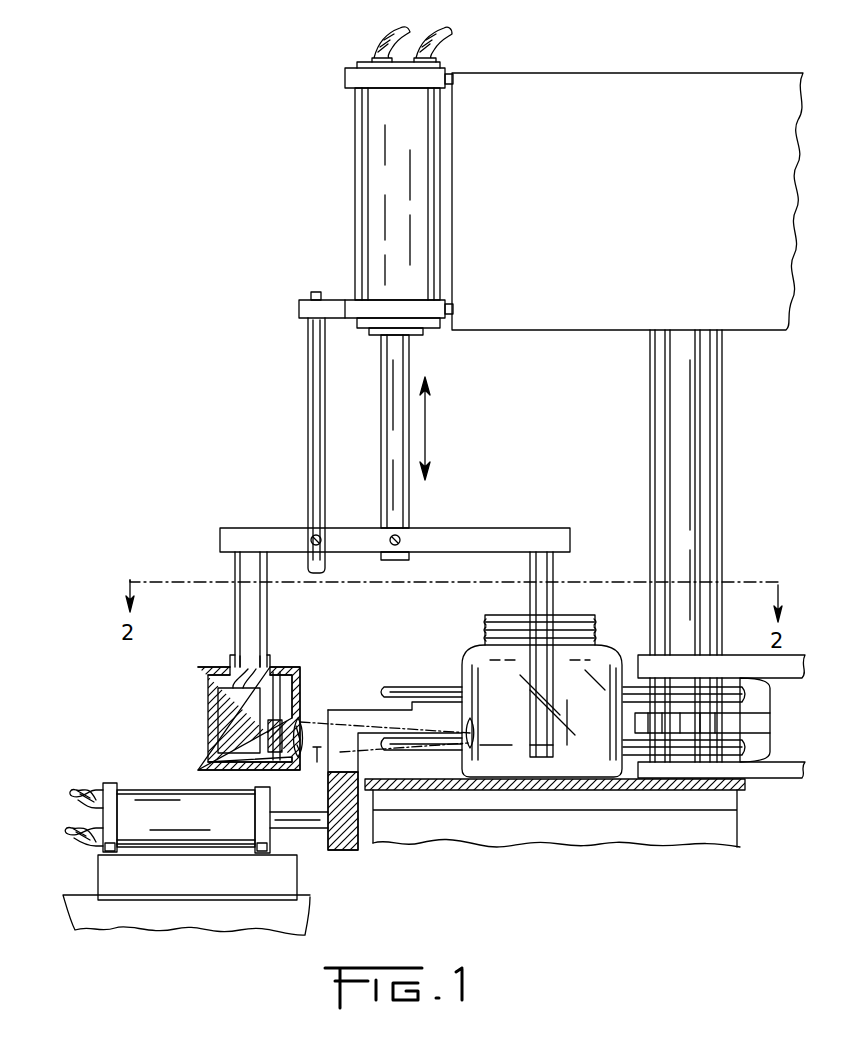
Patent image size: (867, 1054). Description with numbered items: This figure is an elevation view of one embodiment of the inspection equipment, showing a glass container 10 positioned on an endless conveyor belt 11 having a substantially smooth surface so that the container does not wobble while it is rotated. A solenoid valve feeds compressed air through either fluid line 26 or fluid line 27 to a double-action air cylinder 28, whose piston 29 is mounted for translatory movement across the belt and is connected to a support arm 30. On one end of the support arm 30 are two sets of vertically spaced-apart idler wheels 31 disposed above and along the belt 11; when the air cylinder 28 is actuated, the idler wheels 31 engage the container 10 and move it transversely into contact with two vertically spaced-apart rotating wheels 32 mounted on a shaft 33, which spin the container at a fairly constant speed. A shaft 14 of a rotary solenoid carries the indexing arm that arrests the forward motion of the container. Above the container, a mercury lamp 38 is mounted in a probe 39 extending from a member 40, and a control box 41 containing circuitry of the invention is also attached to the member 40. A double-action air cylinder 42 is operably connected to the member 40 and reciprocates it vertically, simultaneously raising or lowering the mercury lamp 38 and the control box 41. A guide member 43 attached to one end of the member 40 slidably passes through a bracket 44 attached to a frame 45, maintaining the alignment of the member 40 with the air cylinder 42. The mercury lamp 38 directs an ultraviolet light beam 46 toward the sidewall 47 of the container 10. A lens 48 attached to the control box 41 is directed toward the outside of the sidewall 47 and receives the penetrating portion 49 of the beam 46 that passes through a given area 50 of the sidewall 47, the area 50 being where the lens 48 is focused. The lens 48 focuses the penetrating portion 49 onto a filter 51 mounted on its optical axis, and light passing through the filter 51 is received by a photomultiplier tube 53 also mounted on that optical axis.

The glass container 10 is at (468, 656).
The endless conveyor belt 11 is at (745, 793).
The shaft 14 is at (731, 680).
The fluid line 26 is at (100, 790).
The fluid line 27 is at (80, 846).
The double-action air cylinder 28 is at (128, 790).
The piston 29 is at (310, 830).
The support arm 30 is at (372, 710).
The idler wheels 31 is at (400, 690).
The rotating wheels 32 is at (745, 695).
The shaft 33 is at (722, 615).
The mercury lamp 38 is at (540, 752).
The probe 39 is at (556, 575).
The member 40 is at (493, 528).
The control box 41 is at (290, 668).
The double-action air cylinder 42 is at (441, 272).
The guide member 43 is at (308, 396).
The bracket 44 is at (355, 272).
The frame 45 is at (603, 281).
The ultraviolet light beam 46 is at (512, 747).
The sidewall 47 is at (567, 745).
The lens 48 is at (302, 720).
The penetrating portion 49 is at (317, 762).
The area 50 is at (470, 732).
The filter 51 is at (270, 722).
The photomultiplier tube 53 is at (250, 734).